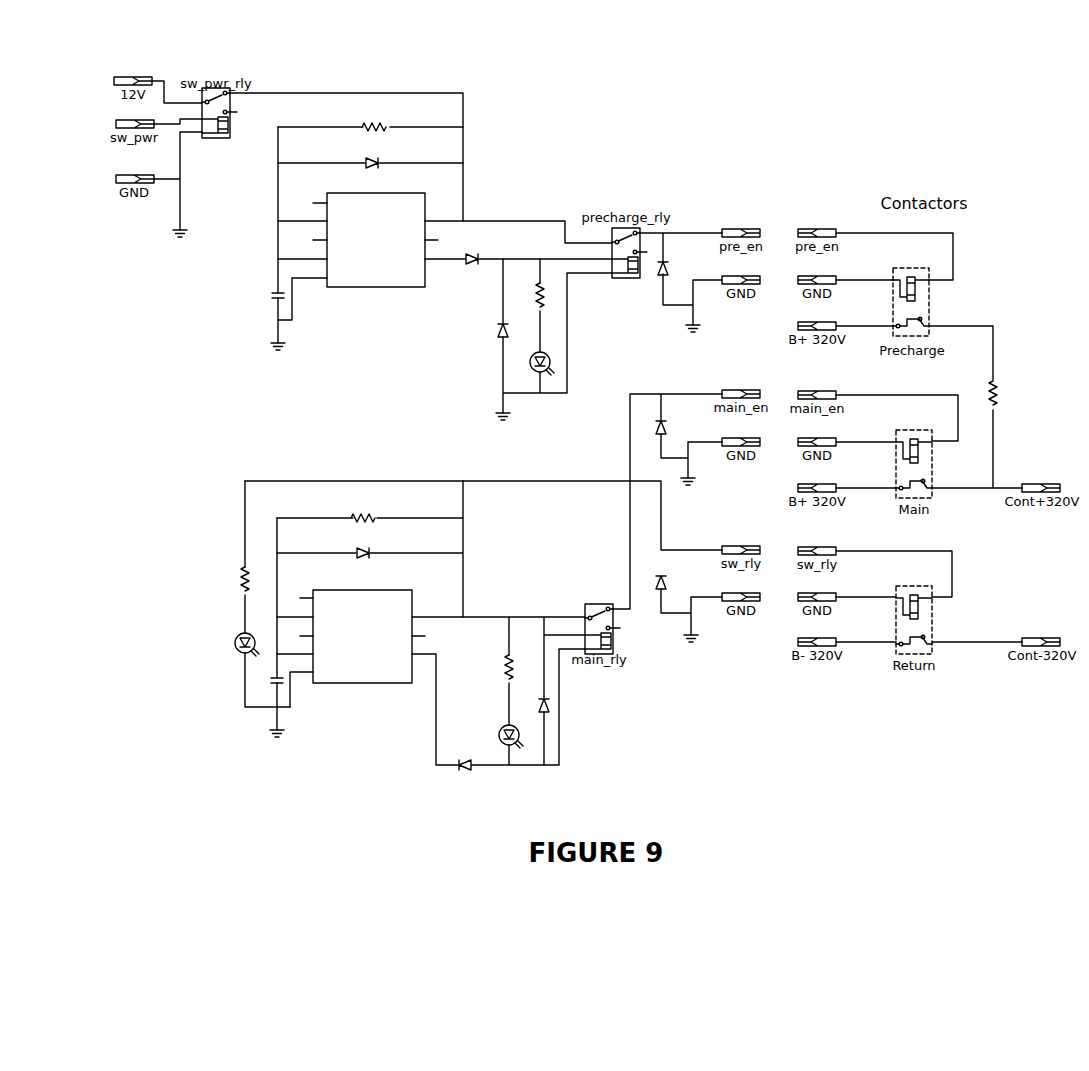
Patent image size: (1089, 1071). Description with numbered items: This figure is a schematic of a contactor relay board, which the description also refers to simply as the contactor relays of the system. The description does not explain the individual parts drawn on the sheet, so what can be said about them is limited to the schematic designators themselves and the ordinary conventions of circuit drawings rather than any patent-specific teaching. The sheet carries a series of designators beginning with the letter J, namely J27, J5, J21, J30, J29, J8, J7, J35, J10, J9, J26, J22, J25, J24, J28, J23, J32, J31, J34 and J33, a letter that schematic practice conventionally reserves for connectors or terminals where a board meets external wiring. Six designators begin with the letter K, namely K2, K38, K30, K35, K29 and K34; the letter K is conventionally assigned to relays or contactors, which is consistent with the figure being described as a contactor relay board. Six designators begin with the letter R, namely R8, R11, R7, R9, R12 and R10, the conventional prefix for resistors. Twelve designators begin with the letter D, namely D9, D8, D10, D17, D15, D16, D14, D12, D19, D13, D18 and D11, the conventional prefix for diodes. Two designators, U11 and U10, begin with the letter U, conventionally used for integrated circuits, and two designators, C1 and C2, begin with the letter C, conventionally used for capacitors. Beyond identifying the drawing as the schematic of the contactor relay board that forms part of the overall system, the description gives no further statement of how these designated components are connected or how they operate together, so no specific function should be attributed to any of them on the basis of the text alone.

The 12V input connector J27 is at (133, 73).
The sw_pwr input connector J5 is at (135, 116).
The GND connector J21 is at (135, 171).
The sw_pwr relay K2 is at (219, 121).
The resistor R8 is at (374, 119).
The diode D9 is at (372, 155).
The timer IC U11 is at (376, 232).
The capacitor C1 is at (269, 295).
The diode D8 is at (472, 251).
The diode D10 is at (493, 330).
The resistor R11 is at (530, 296).
The LED D17 is at (533, 362).
The precharge relay K38 is at (629, 261).
The diode D15 is at (671, 268).
The pre_en connector J30 is at (741, 225).
The GND connector J29 is at (741, 272).
The pre_en connector J8 is at (817, 225).
The GND connector J7 is at (817, 272).
The B+ 320V connector J35 is at (817, 318).
The precharge contactor K35 is at (911, 293).
The precharge resistor R7 is at (982, 393).
The main_en connector J10 is at (817, 387).
The GND connector J9 is at (817, 434).
The B+ 320V connector J26 is at (817, 480).
The main contactor K29 is at (914, 455).
The Cont+320V connector J22 is at (1041, 480).
The sw_rly connector J25 is at (817, 543).
The GND connector J24 is at (817, 589).
The B- 320V connector J28 is at (817, 634).
The return contactor K34 is at (914, 611).
The Cont-320V connector J23 is at (1041, 634).
The main_en connector J32 is at (741, 386).
The GND connector J31 is at (741, 434).
The diode D16 is at (669, 427).
The sw_rly connector J34 is at (741, 542).
The GND connector J33 is at (741, 589).
The diode D14 is at (669, 582).
The main relay K30 is at (602, 620).
The resistor R9 is at (363, 510).
The diode D12 is at (363, 545).
The timer IC U10 is at (362, 628).
The resistor R12 is at (234, 580).
The LED D19 is at (238, 643).
The capacitor C2 is at (267, 680).
The resistor R10 is at (499, 668).
The diode D13 is at (534, 705).
The LED D18 is at (502, 735).
The diode D11 is at (465, 773).